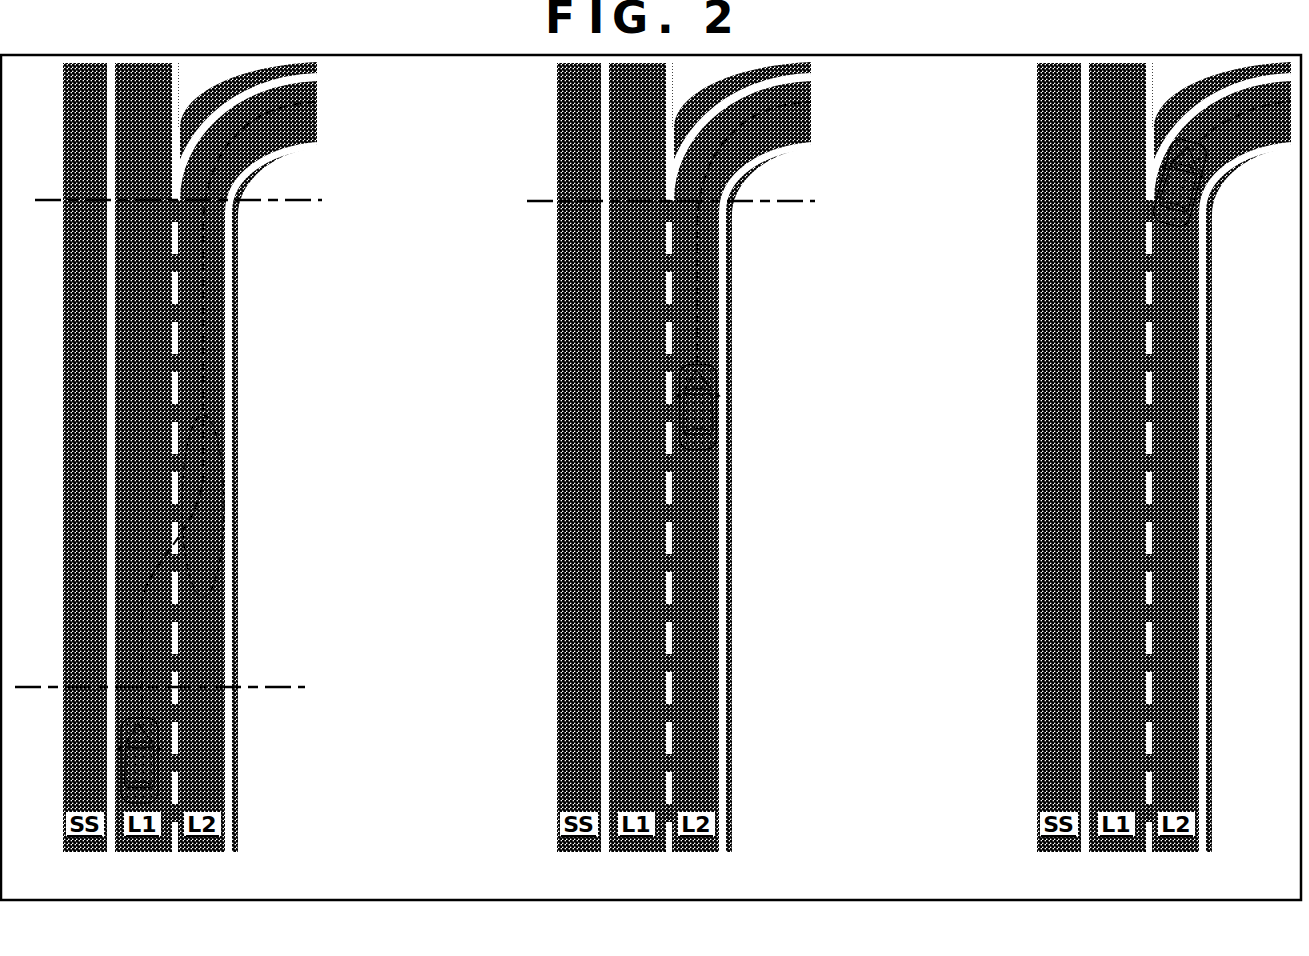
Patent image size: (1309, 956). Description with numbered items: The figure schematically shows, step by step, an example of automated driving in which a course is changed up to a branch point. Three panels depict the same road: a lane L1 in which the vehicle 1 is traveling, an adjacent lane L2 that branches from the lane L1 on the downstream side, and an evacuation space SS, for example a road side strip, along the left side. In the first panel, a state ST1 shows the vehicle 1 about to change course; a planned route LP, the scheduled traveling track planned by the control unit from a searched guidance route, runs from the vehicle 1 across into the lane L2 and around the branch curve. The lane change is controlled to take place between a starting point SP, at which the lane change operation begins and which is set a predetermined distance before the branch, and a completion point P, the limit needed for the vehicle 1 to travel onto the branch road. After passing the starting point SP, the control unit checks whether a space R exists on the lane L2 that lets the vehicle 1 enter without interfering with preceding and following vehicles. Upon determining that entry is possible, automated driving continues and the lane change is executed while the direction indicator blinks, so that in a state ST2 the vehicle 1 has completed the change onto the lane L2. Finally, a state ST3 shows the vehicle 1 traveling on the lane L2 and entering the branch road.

The vehicle 1 is at (157, 763).
The planned route LP is at (205, 372).
The space R is at (220, 437).
The completion point P is at (438, 205).
The starting point SP is at (182, 688).
The evacuation space SS is at (572, 457).
The lane L1 is at (630, 457).
The lane L2 is at (731, 457).
The state ST1 is at (138, 889).
The state ST2 is at (627, 889).
The state ST3 is at (1102, 889).